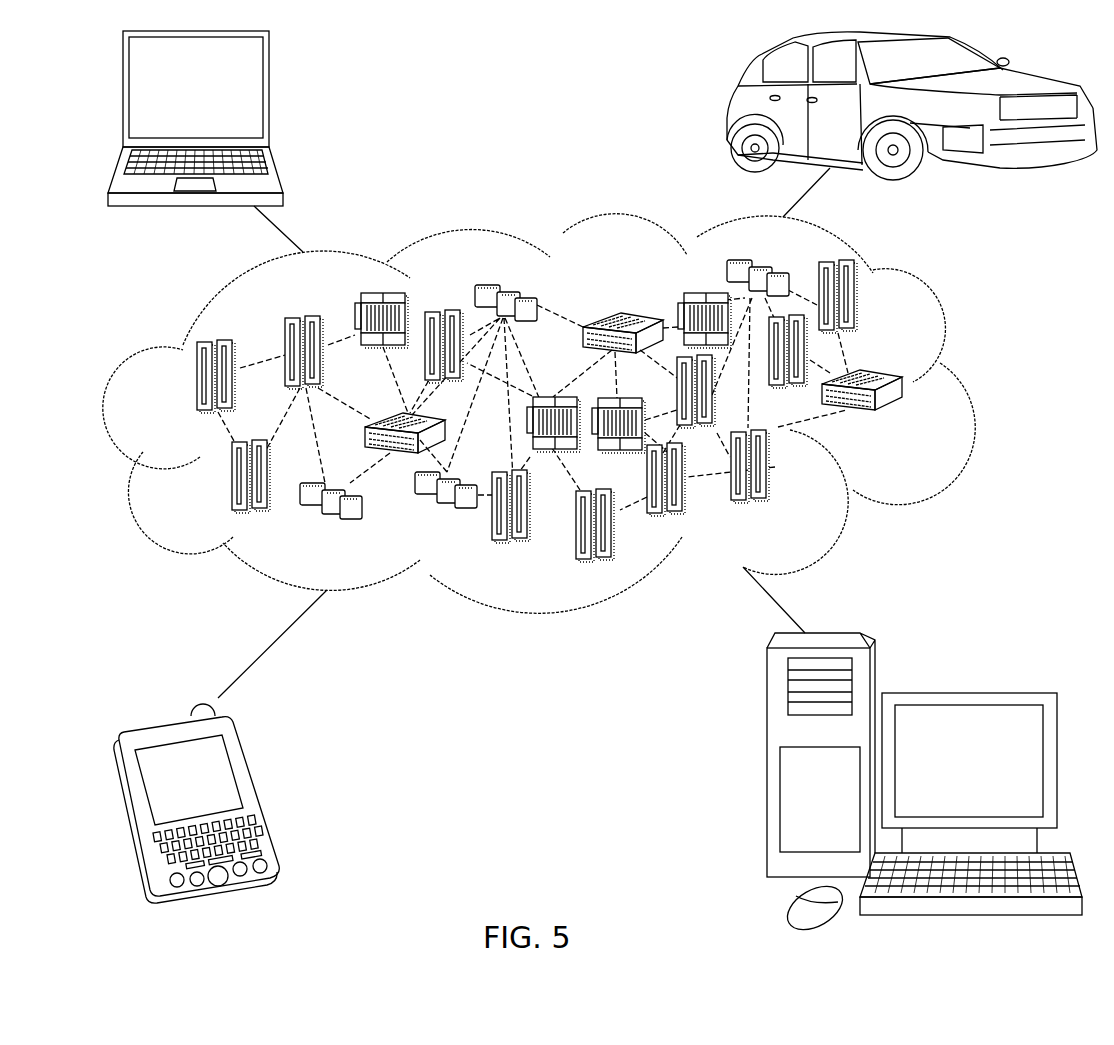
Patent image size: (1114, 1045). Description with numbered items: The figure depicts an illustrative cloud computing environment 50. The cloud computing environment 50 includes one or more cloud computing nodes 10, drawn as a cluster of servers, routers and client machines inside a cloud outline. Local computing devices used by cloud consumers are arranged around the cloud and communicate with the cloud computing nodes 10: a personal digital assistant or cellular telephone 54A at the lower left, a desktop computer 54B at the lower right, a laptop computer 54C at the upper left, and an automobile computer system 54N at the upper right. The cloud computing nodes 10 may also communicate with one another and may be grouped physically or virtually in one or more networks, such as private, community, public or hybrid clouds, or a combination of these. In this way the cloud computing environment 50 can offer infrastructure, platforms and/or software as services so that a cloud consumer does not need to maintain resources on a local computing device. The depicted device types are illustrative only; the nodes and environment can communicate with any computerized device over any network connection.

The cloud computing environment 50 is at (564, 414).
The cloud computing node 10 is at (905, 418).
The personal digital assistant or cellular telephone 54A is at (257, 797).
The desktop computer 54B is at (968, 693).
The laptop computer 54C is at (268, 98).
The automobile computer system 54N is at (735, 113).